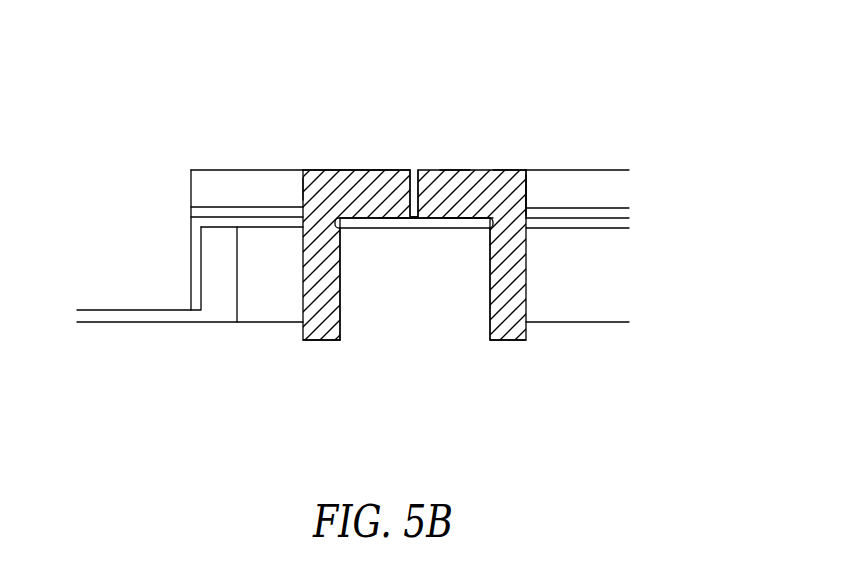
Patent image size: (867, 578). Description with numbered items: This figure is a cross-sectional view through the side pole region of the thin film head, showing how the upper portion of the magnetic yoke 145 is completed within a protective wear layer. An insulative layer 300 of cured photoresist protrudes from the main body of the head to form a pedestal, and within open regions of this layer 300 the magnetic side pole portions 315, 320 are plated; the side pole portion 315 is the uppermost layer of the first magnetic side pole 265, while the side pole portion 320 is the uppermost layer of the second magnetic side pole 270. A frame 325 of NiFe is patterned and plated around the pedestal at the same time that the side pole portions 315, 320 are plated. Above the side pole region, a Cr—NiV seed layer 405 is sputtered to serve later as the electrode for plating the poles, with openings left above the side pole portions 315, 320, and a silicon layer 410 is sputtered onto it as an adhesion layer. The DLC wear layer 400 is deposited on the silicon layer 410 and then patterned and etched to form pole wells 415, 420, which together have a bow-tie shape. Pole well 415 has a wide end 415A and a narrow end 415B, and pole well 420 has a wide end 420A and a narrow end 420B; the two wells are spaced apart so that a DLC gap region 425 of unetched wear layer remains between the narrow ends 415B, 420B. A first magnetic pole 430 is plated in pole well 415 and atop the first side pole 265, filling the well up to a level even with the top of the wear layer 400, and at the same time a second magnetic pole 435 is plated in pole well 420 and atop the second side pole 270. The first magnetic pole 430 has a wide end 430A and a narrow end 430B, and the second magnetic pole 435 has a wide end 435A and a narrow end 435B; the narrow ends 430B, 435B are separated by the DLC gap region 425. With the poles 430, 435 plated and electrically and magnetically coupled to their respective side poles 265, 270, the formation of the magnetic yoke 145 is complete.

The insulative layer 300 is at (623, 284).
The magnetic yoke 145 is at (520, 270).
The first magnetic side pole 265 is at (312, 344).
The second magnetic side pole 270 is at (522, 346).
The magnetic side pole portion 315 is at (338, 281).
The magnetic side pole portion 320 is at (490, 280).
The frame 325 is at (213, 273).
The DLC wear layer 400 is at (199, 169).
The seed layer 405 is at (473, 212).
The silicon layer 410 is at (578, 213).
The pole well 415 is at (294, 196).
The wide end 415A is at (321, 171).
The narrow end 415B is at (362, 172).
The pole well 420 is at (527, 207).
The wide end 420A is at (527, 188).
The narrow end 420B is at (452, 205).
The DLC gap region 425 is at (416, 233).
The first magnetic pole 430 is at (391, 169).
The wide end 430A is at (303, 186).
The narrow end 430B is at (405, 180).
The second magnetic pole 435 is at (432, 169).
The wide end 435A is at (527, 198).
The narrow end 435B is at (447, 215).